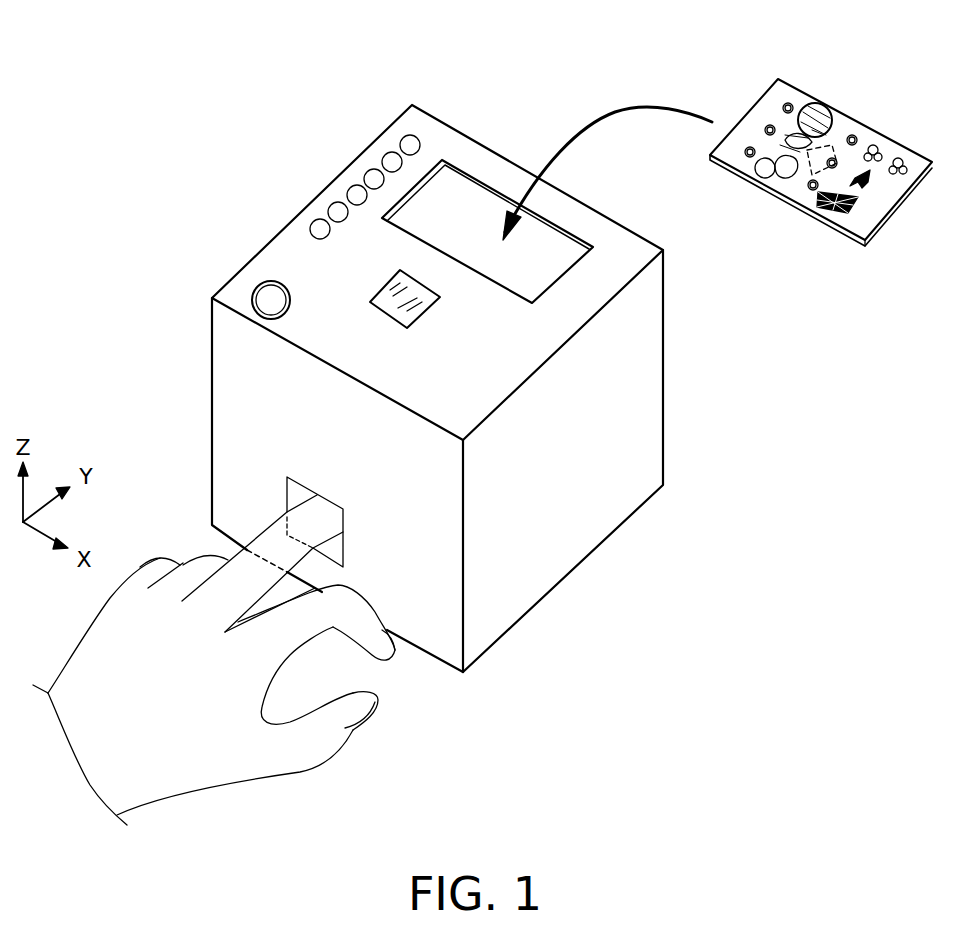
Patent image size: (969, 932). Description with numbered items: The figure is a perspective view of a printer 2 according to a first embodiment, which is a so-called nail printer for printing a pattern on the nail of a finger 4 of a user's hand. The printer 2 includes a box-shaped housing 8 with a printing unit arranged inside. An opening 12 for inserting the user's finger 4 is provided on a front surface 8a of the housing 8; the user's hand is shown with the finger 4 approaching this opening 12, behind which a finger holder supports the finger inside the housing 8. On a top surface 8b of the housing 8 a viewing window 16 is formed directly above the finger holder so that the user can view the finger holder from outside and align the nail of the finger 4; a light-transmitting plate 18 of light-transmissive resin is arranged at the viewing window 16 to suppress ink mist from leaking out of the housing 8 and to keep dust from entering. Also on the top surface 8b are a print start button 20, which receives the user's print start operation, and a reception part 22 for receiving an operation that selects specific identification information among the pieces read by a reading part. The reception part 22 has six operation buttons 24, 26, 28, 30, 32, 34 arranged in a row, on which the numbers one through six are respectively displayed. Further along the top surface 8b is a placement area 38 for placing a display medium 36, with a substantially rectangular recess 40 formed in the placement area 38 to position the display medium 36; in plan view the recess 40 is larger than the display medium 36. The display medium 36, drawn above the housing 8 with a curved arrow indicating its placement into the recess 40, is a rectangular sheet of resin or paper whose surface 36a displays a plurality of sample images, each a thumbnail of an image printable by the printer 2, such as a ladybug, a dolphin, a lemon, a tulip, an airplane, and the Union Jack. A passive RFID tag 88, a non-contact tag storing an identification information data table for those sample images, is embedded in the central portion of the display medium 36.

The printer 2 is at (513, 90).
The finger 4 is at (253, 536).
The housing 8 is at (664, 396).
The front surface 8a is at (212, 393).
The top surface 8b is at (630, 248).
The opening 12 is at (287, 490).
The viewing window 16 is at (299, 288).
The light-transmitting plate 18 is at (387, 310).
The print start button 20 is at (268, 298).
The reception part 22 is at (305, 127).
The operation button 24 is at (401, 137).
The operation button 26 is at (383, 154).
The operation button 28 is at (365, 171).
The operation button 30 is at (348, 187).
The operation button 32 is at (329, 204).
The operation button 34 is at (287, 197).
The display medium 36 is at (821, 144).
The surface 36a is at (803, 105).
The placement area 38 is at (458, 203).
The recess 40 is at (530, 230).
The RFID tag 88 is at (805, 173).